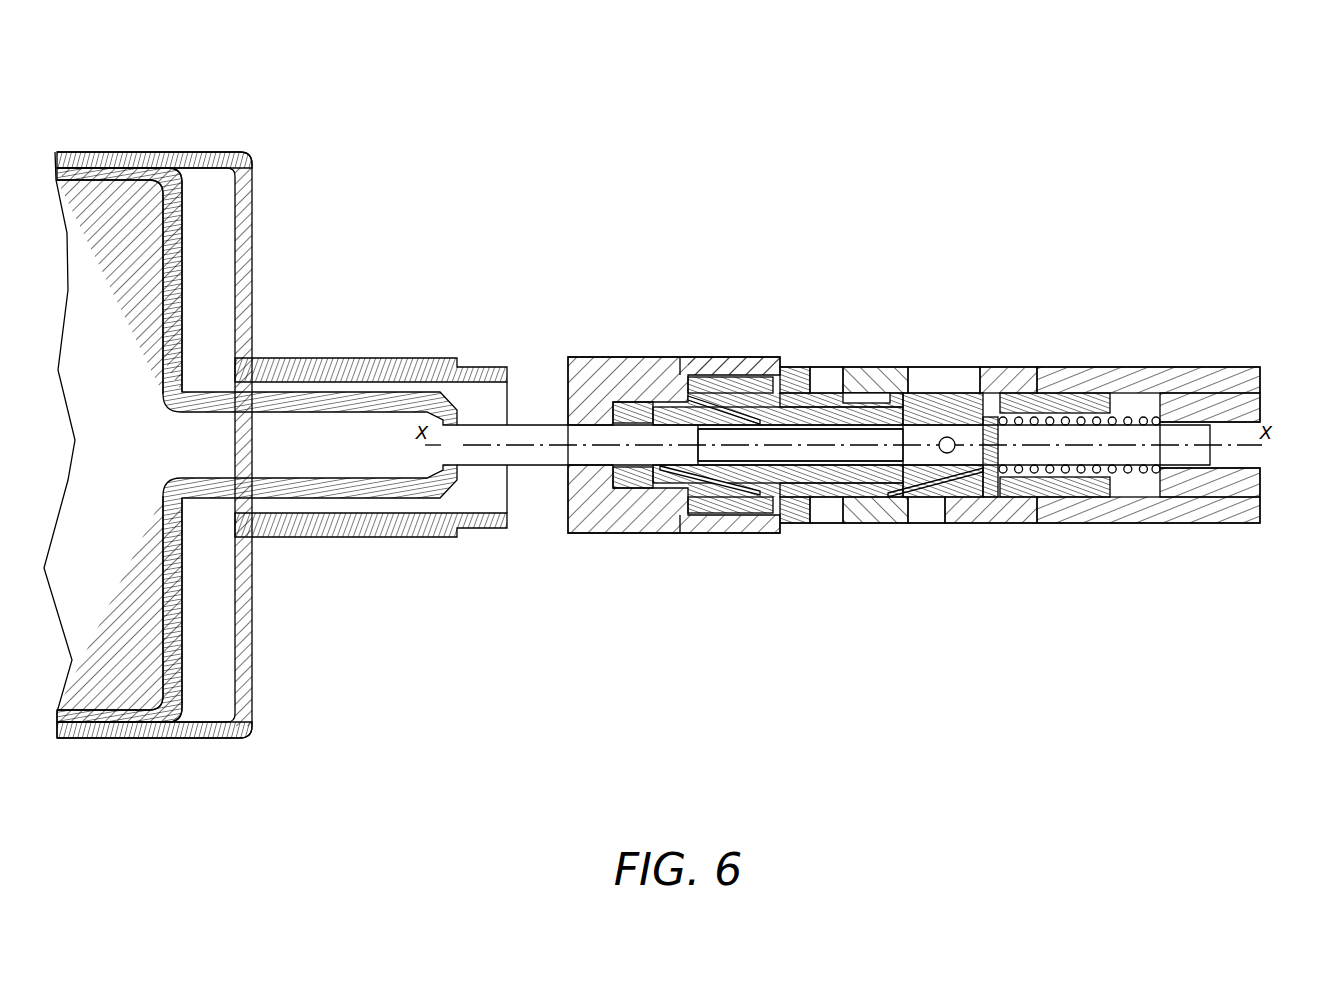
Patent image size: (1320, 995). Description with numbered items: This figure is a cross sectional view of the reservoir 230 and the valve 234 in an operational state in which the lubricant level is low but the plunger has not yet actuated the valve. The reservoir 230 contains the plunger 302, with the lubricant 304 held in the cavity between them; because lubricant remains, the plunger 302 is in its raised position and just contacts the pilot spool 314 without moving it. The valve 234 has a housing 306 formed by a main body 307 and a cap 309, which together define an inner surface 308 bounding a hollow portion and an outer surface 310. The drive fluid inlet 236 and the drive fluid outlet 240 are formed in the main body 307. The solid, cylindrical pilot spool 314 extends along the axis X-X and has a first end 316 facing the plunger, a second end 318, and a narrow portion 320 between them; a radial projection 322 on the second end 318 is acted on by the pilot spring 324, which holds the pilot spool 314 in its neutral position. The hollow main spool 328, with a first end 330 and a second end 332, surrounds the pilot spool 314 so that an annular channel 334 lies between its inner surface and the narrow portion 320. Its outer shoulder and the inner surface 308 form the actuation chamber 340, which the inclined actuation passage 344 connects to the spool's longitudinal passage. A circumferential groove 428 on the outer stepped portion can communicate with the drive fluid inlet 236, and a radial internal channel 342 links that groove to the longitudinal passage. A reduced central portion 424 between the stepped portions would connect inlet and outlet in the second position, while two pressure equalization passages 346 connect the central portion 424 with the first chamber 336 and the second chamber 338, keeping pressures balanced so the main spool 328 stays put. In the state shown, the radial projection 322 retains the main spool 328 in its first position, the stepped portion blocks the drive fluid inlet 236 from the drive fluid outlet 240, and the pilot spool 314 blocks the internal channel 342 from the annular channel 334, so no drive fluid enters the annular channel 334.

The reservoir 230 is at (183, 152).
The lubricant 304 is at (208, 268).
The plunger 302 is at (278, 458).
The first end 316 is at (539, 386).
The pilot spool 314 is at (527, 466).
The cap 309 is at (564, 534).
The housing 306 is at (1128, 560).
The main spool 328 is at (765, 367).
The first end 330 is at (661, 400).
The actuation chamber 340 is at (693, 398).
The first chamber 336 is at (660, 488).
The actuation passage 344 is at (706, 407).
The pressure equalization passages 346 is at (756, 494).
The narrow portion 320 is at (768, 461).
The central portion 424 is at (823, 484).
The drive fluid outlet 240 is at (815, 376).
The inner surface 308 is at (890, 402).
The drive fluid inlet 236 is at (932, 396).
The outer surface 310 is at (1010, 367).
The annular channel 334 is at (842, 400).
The internal channel 342 is at (962, 420).
The circumferential groove 428 is at (947, 437).
The radial projection 322 is at (985, 520).
The second chamber 338 is at (1138, 405).
The pilot spring 324 is at (1143, 475).
The second end 332 is at (1087, 367).
The main body 307 is at (1062, 524).
The second end 318 is at (1242, 458).
The valve 234 is at (1226, 290).